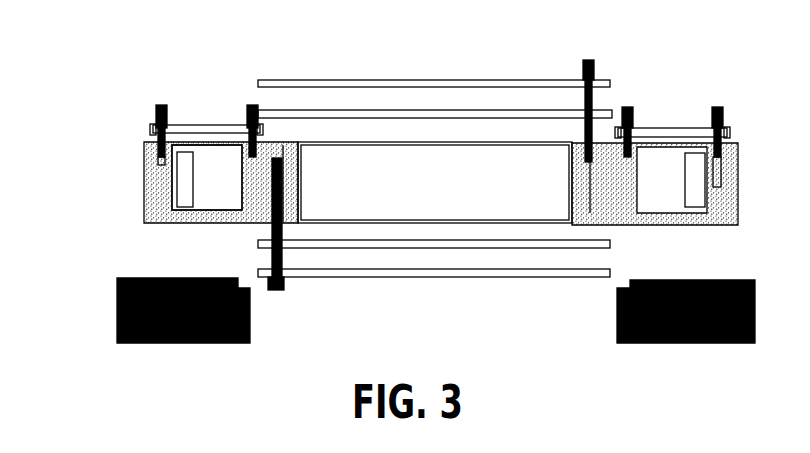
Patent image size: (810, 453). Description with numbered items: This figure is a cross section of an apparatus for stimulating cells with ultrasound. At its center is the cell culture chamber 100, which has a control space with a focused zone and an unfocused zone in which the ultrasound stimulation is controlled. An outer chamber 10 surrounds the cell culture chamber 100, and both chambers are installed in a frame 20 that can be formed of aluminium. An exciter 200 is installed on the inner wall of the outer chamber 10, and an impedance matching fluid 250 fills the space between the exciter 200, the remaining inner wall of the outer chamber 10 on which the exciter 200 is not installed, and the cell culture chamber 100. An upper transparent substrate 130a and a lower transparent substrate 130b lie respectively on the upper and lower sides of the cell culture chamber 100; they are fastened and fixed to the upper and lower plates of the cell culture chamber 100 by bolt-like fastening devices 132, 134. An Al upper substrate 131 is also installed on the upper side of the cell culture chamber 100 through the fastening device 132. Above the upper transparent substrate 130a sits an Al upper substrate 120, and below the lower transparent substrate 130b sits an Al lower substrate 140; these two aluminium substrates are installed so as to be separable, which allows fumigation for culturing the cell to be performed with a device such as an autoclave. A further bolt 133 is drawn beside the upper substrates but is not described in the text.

The outer chamber 10 is at (202, 210).
The frame 20 is at (728, 200).
The cell culture chamber 100 is at (425, 145).
The Al upper substrate 120 is at (258, 83).
The upper transparent substrate 130a is at (268, 112).
The lower transparent substrate 130b is at (258, 244).
The Al upper substrate 131 is at (152, 129).
The fastening device 132 is at (248, 106).
The guide bolt 133 is at (594, 65).
The fastening device 134 is at (280, 230).
The Al lower substrate 140 is at (258, 273).
The exciter 200 is at (165, 163).
The impedance matching fluid 250 is at (208, 173).